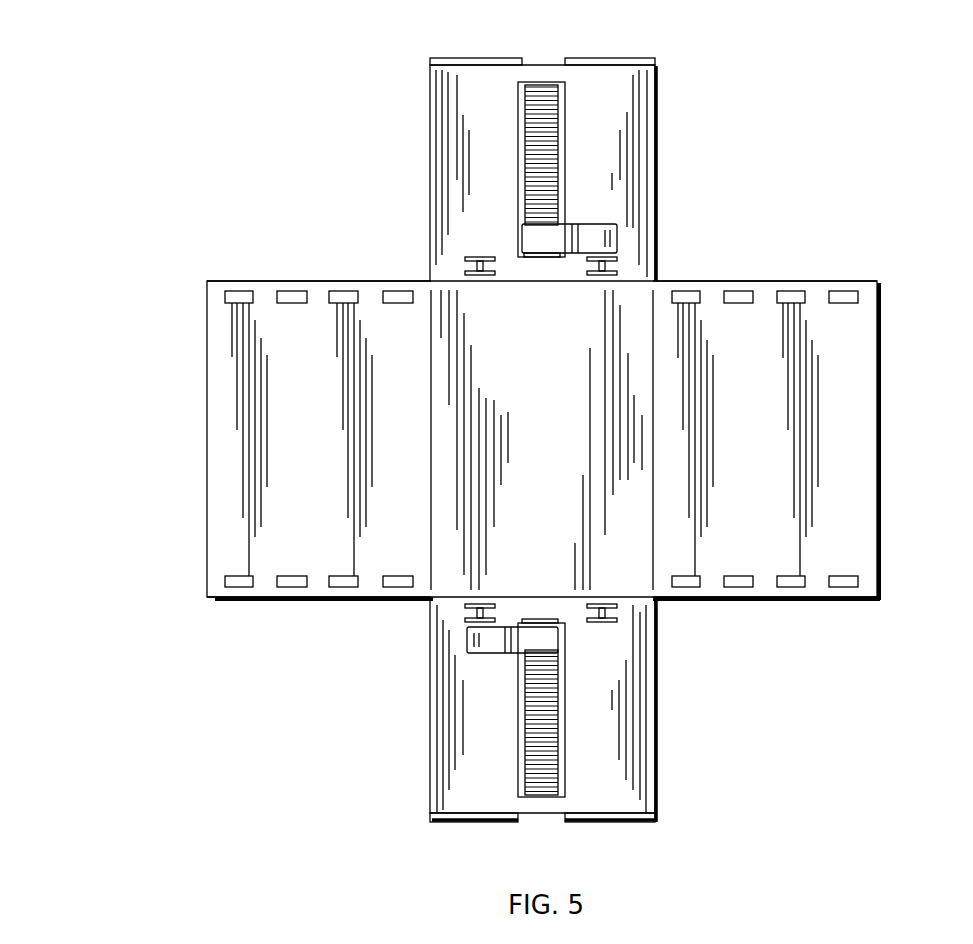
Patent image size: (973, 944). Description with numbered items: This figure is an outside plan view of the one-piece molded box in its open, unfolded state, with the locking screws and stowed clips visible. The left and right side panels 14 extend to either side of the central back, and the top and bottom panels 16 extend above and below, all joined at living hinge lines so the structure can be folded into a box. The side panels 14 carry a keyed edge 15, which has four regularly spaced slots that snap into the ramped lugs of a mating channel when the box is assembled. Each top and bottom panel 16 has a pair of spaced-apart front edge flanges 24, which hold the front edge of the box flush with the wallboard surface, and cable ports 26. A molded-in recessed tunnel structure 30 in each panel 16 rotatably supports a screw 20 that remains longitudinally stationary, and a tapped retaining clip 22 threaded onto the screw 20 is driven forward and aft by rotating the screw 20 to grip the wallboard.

The side panel 14 is at (222, 423).
The keyed edge 15 is at (278, 281).
The top and bottom panel 16 is at (610, 105).
The screw 20 is at (558, 157).
The retaining clip 22 is at (578, 225).
The front edge flange 24 is at (503, 58).
The cable port 26 is at (445, 285).
The tunnel structure 30 is at (565, 127).